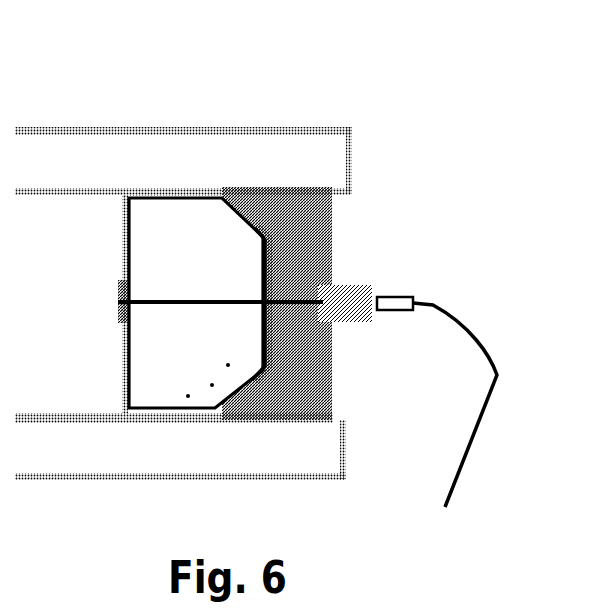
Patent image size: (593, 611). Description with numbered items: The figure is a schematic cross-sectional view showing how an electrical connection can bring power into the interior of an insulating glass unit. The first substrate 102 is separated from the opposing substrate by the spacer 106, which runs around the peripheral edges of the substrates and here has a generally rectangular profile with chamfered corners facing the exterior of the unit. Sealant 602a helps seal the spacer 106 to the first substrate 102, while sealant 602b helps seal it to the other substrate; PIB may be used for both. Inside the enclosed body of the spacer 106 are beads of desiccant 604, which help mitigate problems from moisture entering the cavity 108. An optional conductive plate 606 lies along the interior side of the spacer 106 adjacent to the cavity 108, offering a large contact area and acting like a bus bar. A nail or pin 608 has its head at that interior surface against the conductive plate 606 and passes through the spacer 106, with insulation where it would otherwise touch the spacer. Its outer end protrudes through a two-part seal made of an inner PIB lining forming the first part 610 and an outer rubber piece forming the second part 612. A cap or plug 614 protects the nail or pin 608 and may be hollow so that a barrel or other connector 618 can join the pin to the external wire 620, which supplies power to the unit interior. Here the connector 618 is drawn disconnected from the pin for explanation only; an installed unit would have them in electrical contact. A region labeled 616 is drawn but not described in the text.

The first substrate 102 is at (348, 167).
The spacer 106 is at (233, 198).
The cavity 108 is at (78, 247).
The sealant 602a is at (195, 196).
The sealant 602b is at (147, 410).
The desiccant 604 is at (228, 367).
The conductive plate 606 is at (122, 253).
The nail or pin 608 is at (120, 308).
The first part 610 is at (275, 245).
The second part 612 is at (275, 276).
The cap or plug 614 is at (357, 300).
The substrate 616 is at (312, 385).
The barrel or other connector 618 is at (405, 297).
The external wire 620 is at (464, 340).